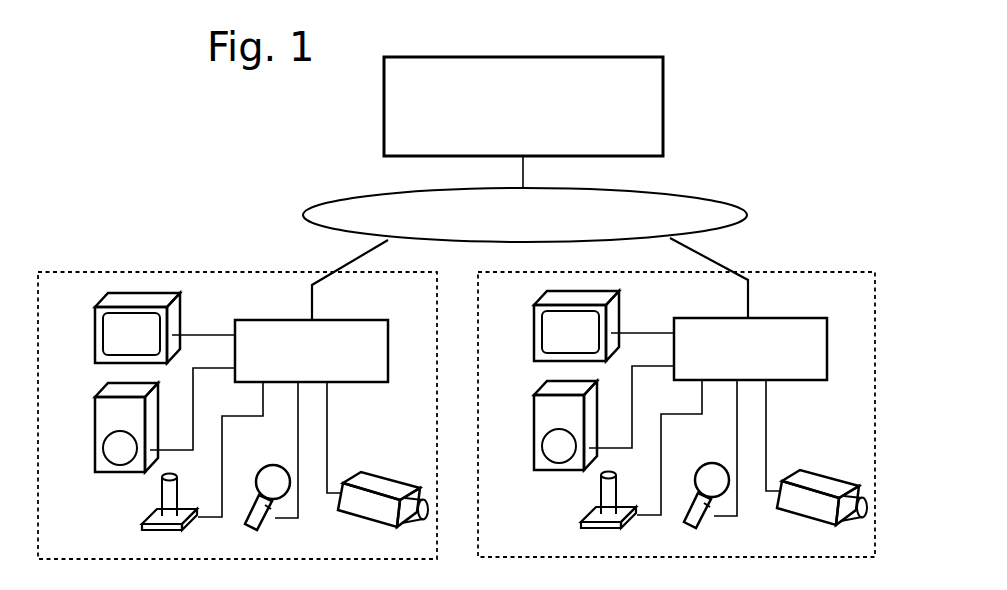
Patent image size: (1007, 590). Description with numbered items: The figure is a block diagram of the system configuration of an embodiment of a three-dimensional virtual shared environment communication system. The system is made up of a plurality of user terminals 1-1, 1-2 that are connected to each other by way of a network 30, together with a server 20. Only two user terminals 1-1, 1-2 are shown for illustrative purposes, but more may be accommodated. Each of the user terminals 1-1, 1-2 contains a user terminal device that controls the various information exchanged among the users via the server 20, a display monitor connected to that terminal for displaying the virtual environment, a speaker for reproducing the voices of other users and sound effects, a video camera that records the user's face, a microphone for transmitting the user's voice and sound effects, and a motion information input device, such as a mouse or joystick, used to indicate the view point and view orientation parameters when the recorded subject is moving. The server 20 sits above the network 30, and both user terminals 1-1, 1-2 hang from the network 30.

The user terminal 1-1 is at (162, 272).
The user terminal 1-2 is at (805, 272).
The server 20 is at (665, 110).
The network 30 is at (707, 197).